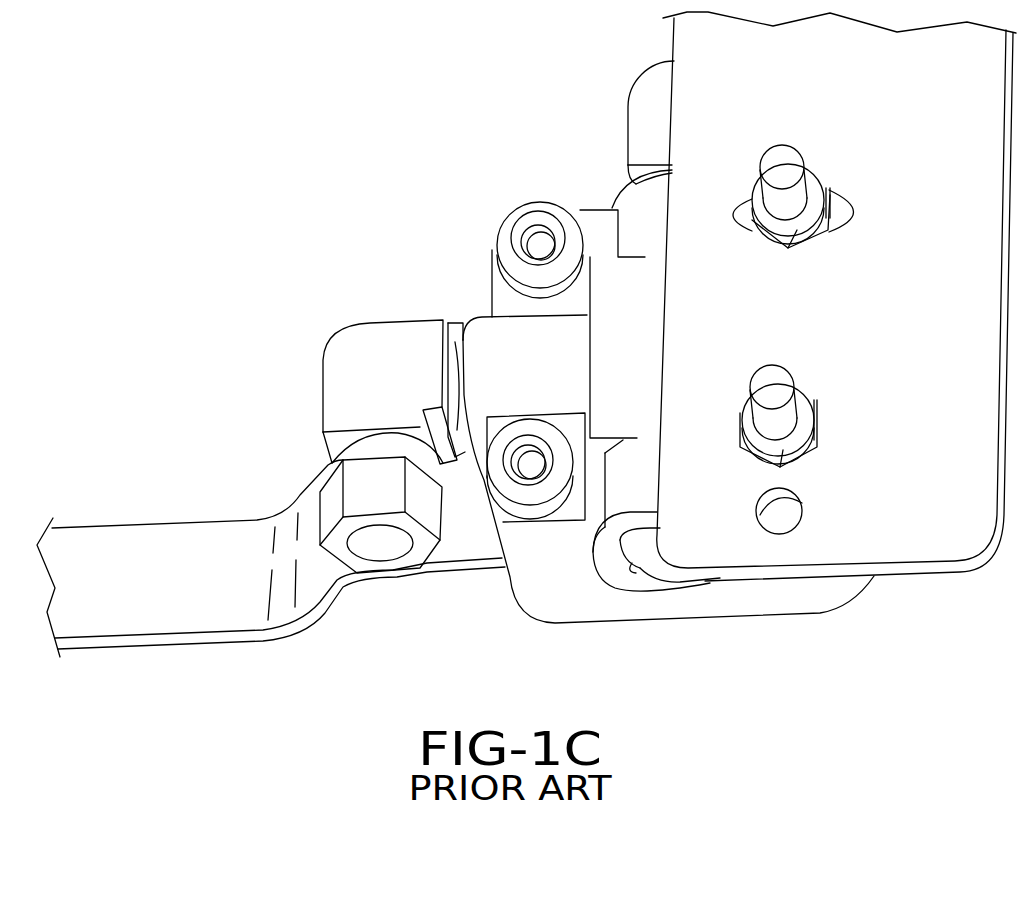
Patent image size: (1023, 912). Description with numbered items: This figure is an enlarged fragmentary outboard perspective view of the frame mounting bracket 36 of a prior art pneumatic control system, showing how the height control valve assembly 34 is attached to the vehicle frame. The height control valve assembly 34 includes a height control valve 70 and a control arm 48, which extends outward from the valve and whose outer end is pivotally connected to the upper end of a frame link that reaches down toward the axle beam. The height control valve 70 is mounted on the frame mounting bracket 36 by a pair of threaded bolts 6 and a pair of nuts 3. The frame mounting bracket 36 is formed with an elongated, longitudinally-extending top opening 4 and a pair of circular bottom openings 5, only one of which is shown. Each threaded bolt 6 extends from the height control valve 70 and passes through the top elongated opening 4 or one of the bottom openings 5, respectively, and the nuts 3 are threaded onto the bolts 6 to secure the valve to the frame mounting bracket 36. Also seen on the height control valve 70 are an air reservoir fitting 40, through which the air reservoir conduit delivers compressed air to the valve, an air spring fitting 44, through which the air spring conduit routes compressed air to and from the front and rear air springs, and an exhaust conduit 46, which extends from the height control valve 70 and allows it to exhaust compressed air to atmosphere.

The nut 3 is at (800, 233).
The top opening 4 is at (840, 193).
The bottom opening 5 is at (790, 500).
The threaded bolt 6 is at (777, 160).
The height control valve assembly 34 is at (490, 258).
The frame mounting bracket 36 is at (898, 300).
The air reservoir fitting 40 is at (648, 90).
The air spring fitting 44 is at (350, 365).
The exhaust conduit 46 is at (640, 572).
The control arm 48 is at (160, 542).
The height control valve 70 is at (568, 625).